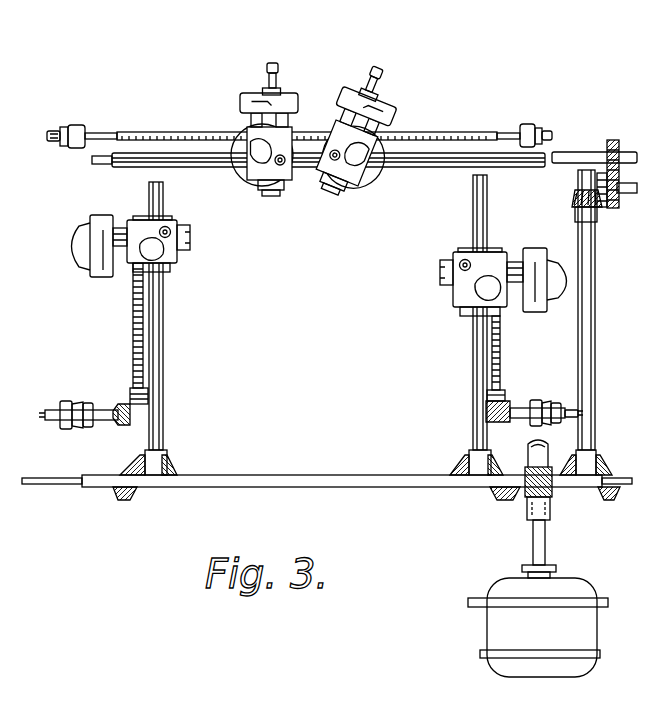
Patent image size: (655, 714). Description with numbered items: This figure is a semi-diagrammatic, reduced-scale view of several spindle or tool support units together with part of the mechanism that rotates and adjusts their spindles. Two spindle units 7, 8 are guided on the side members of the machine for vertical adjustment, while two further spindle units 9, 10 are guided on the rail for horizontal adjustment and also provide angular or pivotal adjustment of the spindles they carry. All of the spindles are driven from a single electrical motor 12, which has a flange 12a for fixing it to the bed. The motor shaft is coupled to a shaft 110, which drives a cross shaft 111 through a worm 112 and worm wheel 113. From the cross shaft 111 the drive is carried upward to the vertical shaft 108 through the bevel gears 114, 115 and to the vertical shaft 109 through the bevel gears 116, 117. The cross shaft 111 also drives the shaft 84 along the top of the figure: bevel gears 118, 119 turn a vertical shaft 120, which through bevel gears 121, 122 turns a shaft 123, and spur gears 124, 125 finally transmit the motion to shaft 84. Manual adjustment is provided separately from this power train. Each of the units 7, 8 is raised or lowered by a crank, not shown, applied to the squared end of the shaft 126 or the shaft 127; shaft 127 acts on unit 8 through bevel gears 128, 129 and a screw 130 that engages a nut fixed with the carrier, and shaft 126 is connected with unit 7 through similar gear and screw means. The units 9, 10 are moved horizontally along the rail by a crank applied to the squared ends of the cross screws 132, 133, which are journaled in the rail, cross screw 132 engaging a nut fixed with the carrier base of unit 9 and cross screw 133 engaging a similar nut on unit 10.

The spindle or tool support unit 7 is at (172, 264).
The spindle or tool support unit 8 is at (450, 287).
The spindle or tool support unit 9 is at (270, 196).
The spindle or tool support unit 10 is at (338, 192).
The motor 12 is at (505, 633).
The flange 12a is at (470, 602).
The shaft 84 is at (436, 168).
The vertical shaft 108 is at (475, 355).
The vertical shaft 109 is at (163, 365).
The shaft 110 is at (541, 547).
The cross shaft 111 is at (325, 487).
The worm 112 is at (552, 488).
The worm wheel 113 is at (549, 515).
The bevel gear 114 is at (505, 498).
The bevel gear 115 is at (460, 462).
The bevel gear 116 is at (125, 498).
The bevel gear 117 is at (168, 460).
The bevel gear 118 is at (611, 496).
The bevel gear 119 is at (600, 462).
The vertical shaft 120 is at (594, 404).
The bevel gear 121 is at (573, 200).
The bevel gear 122 is at (603, 208).
The shaft 123 is at (628, 194).
The spur gear 124 is at (610, 150).
The spur gear 125 is at (614, 140).
The shaft 126 is at (52, 420).
The shaft 127 is at (580, 414).
The bevel gear 128 is at (505, 402).
The bevel gear 129 is at (514, 384).
The screw 130 is at (500, 345).
The cross screw 132 is at (141, 132).
The cross screw 133 is at (447, 132).